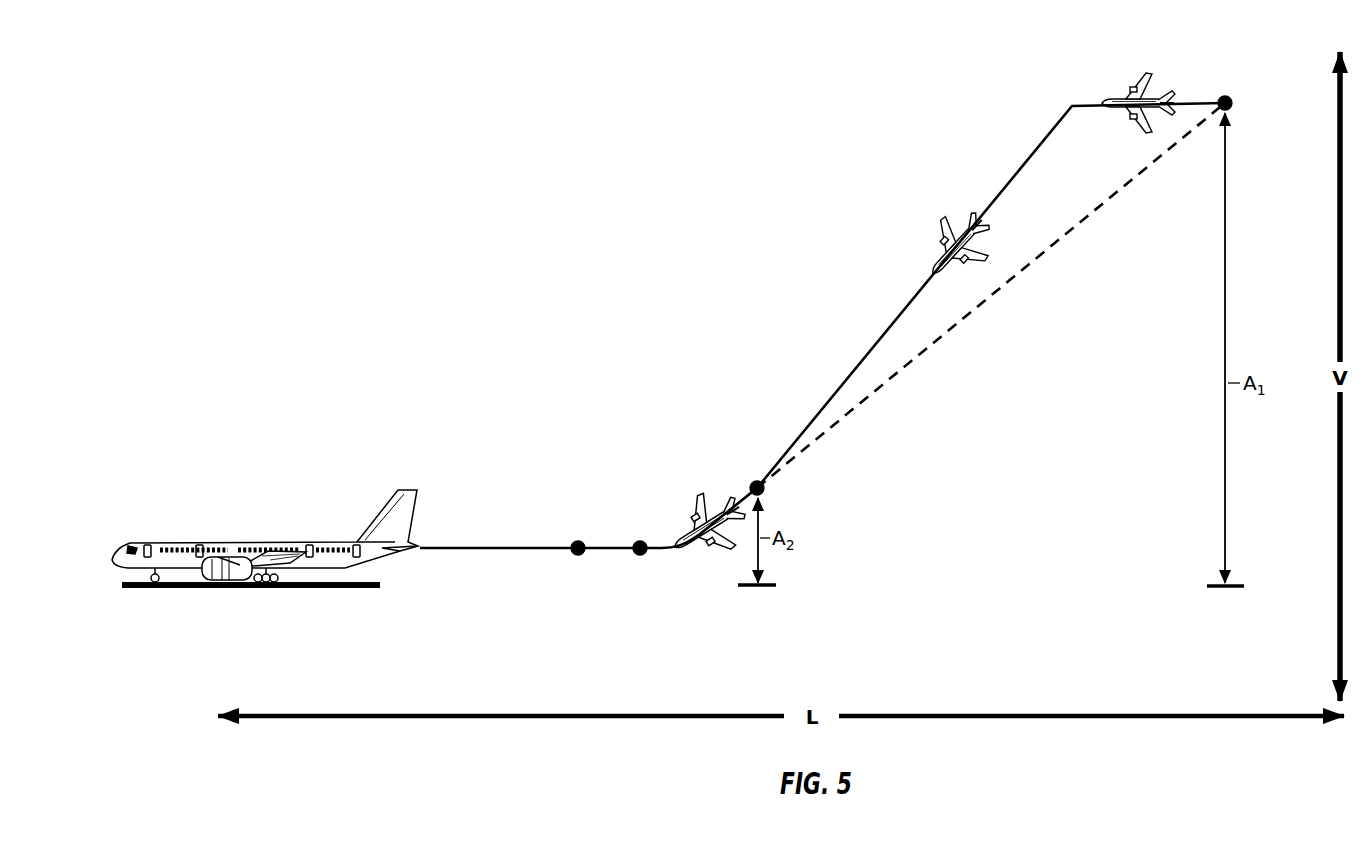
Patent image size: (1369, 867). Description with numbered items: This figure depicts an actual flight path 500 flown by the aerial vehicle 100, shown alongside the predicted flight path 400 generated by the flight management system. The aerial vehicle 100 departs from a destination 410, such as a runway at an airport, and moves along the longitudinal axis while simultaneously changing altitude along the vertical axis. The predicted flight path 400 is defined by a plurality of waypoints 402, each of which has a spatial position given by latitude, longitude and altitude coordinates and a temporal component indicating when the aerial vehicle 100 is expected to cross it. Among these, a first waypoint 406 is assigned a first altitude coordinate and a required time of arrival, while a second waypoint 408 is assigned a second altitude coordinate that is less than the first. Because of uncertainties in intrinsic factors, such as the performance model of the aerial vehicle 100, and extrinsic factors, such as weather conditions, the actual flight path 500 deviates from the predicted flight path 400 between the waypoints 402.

The aerial vehicle 100 is at (253, 528).
The predicted flight path 400 is at (821, 447).
The waypoints 402 is at (580, 541).
The first waypoint 406 is at (1232, 99).
The second waypoint 408 is at (752, 482).
The destination 410 is at (181, 591).
The actual flight path 500 is at (821, 400).